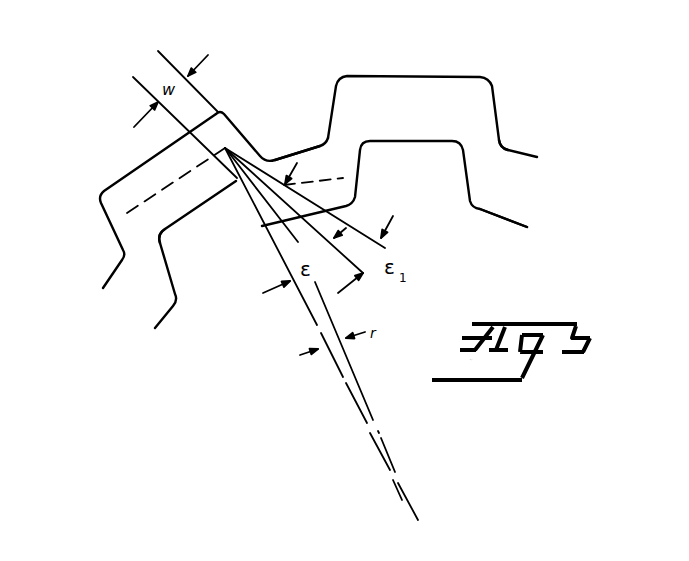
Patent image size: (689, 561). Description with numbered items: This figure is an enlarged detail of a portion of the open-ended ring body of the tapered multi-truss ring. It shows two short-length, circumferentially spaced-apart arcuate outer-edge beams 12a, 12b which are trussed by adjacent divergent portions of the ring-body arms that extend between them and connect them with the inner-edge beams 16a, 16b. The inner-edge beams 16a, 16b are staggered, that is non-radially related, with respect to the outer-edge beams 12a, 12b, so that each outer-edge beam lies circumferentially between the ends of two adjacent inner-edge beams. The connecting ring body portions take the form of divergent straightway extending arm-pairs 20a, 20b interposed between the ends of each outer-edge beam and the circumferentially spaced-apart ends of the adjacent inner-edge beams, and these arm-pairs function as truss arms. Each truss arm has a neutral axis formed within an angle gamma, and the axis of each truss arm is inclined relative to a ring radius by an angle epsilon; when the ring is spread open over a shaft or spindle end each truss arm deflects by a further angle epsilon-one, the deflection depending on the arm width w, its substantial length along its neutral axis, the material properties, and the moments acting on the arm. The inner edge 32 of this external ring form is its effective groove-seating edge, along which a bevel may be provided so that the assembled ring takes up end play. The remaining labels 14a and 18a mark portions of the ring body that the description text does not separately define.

The outer-edge beam 12a is at (461, 96).
The outer-edge beam 12b is at (131, 190).
The root surface between teeth 14a is at (307, 113).
The inner-edge beam 16a is at (320, 152).
The inner-edge beam 16b is at (518, 197).
The tooth of second gear 18a is at (433, 168).
The truss arm 20a is at (150, 252).
The truss arm 20b is at (484, 141).
The inner edge 32 is at (178, 306).